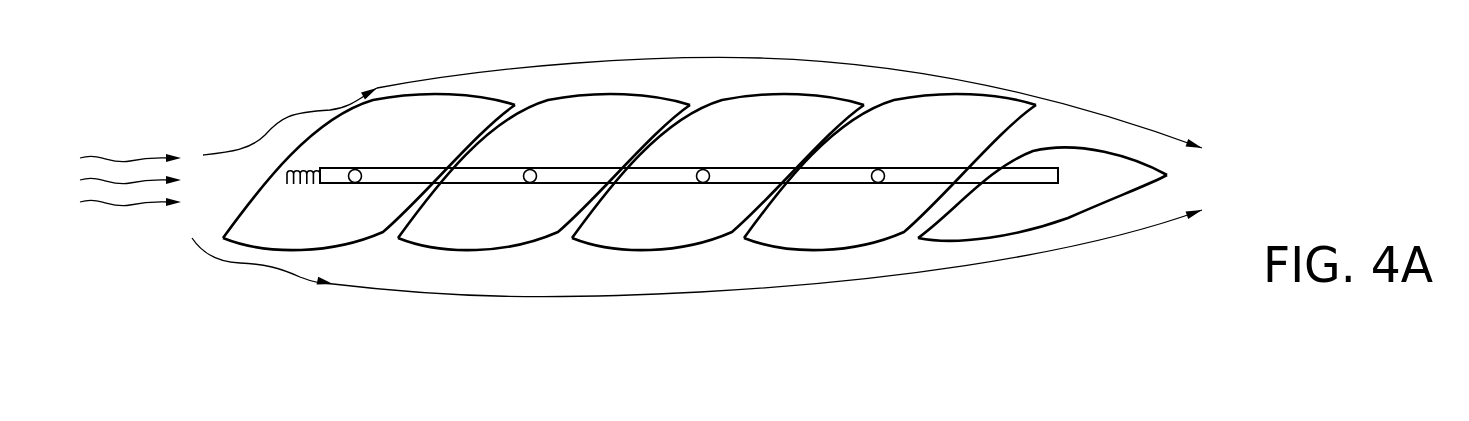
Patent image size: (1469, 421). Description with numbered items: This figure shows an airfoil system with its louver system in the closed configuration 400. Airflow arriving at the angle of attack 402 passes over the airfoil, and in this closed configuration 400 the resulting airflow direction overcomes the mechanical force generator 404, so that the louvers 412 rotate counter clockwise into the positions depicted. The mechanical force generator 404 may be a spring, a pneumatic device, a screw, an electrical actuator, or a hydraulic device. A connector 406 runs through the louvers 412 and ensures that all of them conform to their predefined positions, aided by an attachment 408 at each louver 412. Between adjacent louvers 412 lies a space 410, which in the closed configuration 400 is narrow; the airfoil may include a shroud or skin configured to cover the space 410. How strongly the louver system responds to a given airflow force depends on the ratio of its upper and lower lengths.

The closed configuration 400 is at (1160, 65).
The angle of attack 402 is at (117, 158).
The mechanical force generator 404 is at (307, 170).
The connector 406 is at (408, 173).
The attachment 408 is at (531, 169).
The space 410 is at (587, 212).
The louver 412 is at (657, 110).